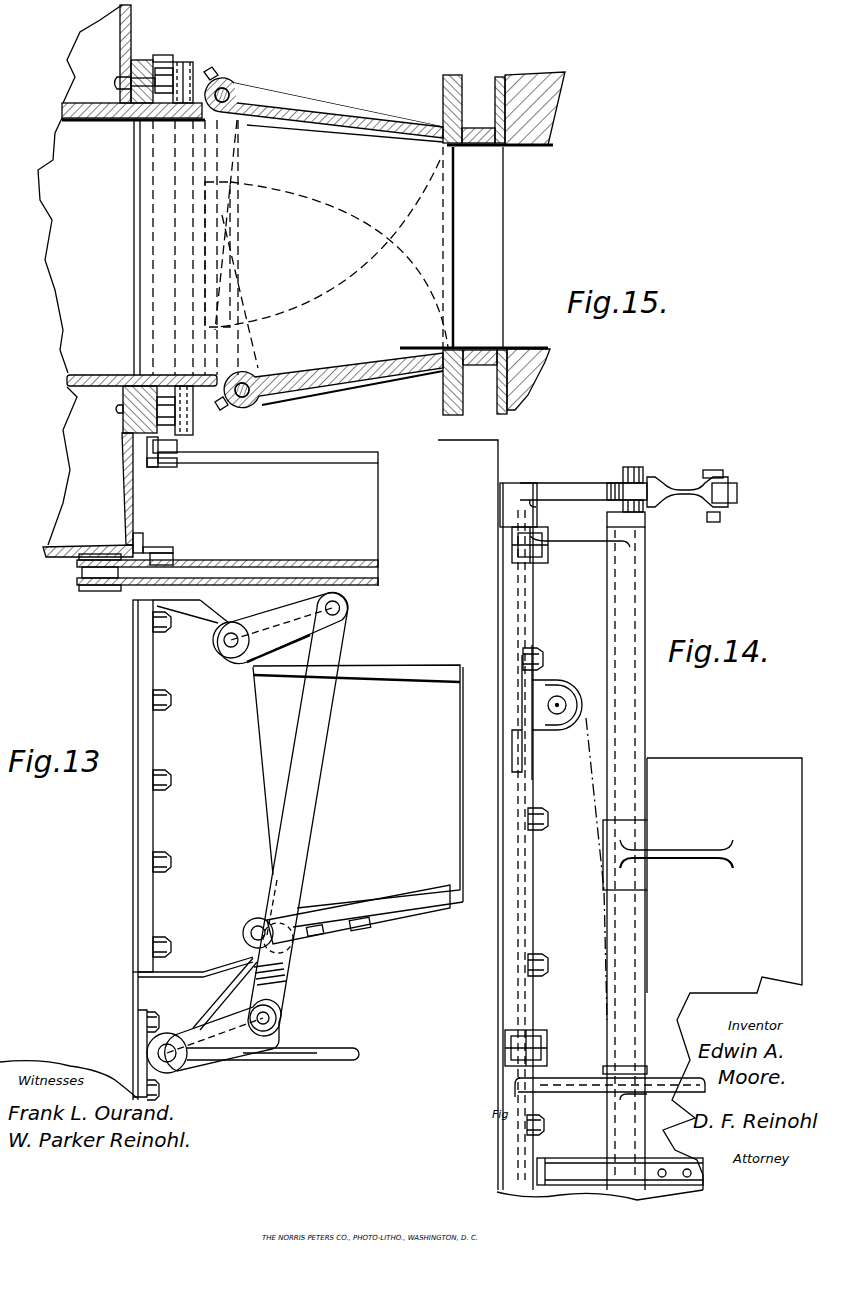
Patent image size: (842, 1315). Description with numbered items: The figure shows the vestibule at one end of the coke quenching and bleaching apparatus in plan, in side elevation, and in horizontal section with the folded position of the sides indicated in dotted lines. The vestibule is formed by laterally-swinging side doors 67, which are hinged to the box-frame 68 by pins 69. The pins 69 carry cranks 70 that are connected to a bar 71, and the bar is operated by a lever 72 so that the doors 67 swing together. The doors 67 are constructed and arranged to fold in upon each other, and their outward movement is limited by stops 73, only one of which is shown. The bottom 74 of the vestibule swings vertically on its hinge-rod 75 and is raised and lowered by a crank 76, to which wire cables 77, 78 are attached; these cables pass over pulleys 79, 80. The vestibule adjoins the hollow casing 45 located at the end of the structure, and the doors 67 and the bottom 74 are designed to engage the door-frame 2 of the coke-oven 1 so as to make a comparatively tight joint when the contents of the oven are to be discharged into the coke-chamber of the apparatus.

In FIG. 15, the coke-oven 1 is at (557, 250).
In FIG. 15, the door-frame 2 is at (443, 393).
In FIG. 15, the hollow casing 45 is at (133, 62).
In FIG. 15, the side doors 67 is at (312, 107).
In FIG. 13, the side doors 67 is at (310, 664).
In FIG. 14, the side doors 67 is at (702, 974).
In FIG. 15, the box-frame 68 is at (222, 382).
In FIG. 13, the box-frame 68 is at (183, 850).
In FIG. 14, the box-frame 68 is at (541, 836).
In FIG. 15, the pins 69 is at (233, 84).
In FIG. 13, the pins 69 is at (228, 645).
In FIG. 14, the pins 69 is at (633, 470).
In FIG. 13, the cranks 70 is at (256, 832).
In FIG. 14, the cranks 70 is at (570, 488).
In FIG. 13, the bar 71 is at (298, 815).
In FIG. 14, the bar 71 is at (732, 495).
In FIG. 13, the lever 72 is at (315, 1055).
In FIG. 14, the lever 72 is at (550, 1079).
In FIG. 13, the stops 73 is at (197, 993).
In FIG. 14, the stops 73 is at (620, 1156).
In FIG. 15, the bottom 74 is at (375, 315).
In FIG. 13, the bottom 74 is at (358, 796).
In FIG. 15, the hinge-rod 75 is at (163, 467).
In FIG. 15, the crank 76 is at (268, 519).
In FIG. 15, the wire cable 77 is at (227, 549).
In FIG. 15, the wire cable 78 is at (273, 577).
In FIG. 14, the wire cable 78 is at (590, 767).
In FIG. 15, the pulley 79 is at (78, 561).
In FIG. 15, the pulley 80 is at (85, 582).
In FIG. 14, the pulley 80 is at (574, 694).